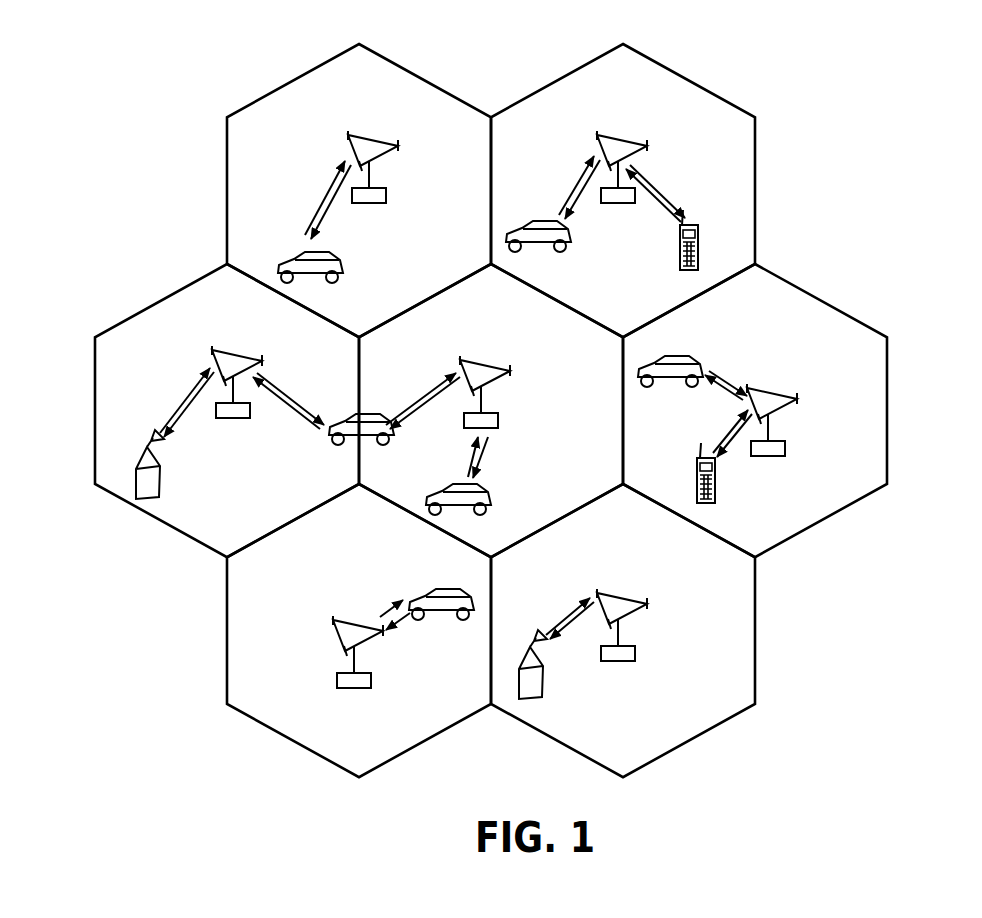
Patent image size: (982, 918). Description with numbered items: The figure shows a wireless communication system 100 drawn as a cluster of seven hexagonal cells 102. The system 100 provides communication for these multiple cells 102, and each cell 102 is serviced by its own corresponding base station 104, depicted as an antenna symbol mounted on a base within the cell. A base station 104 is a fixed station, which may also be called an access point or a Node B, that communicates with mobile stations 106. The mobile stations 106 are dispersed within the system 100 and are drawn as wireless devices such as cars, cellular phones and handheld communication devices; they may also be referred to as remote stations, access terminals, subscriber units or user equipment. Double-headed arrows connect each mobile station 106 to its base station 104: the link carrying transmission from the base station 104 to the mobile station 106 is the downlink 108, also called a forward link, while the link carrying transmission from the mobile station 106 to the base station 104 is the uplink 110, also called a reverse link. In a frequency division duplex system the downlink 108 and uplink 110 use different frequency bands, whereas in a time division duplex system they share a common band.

The wireless communication system 100 is at (876, 72).
The cell 102 is at (303, 75).
The base station 104 is at (358, 138).
The mobile station 106 is at (308, 253).
The downlink 108 is at (340, 217).
The uplink 110 is at (325, 203).